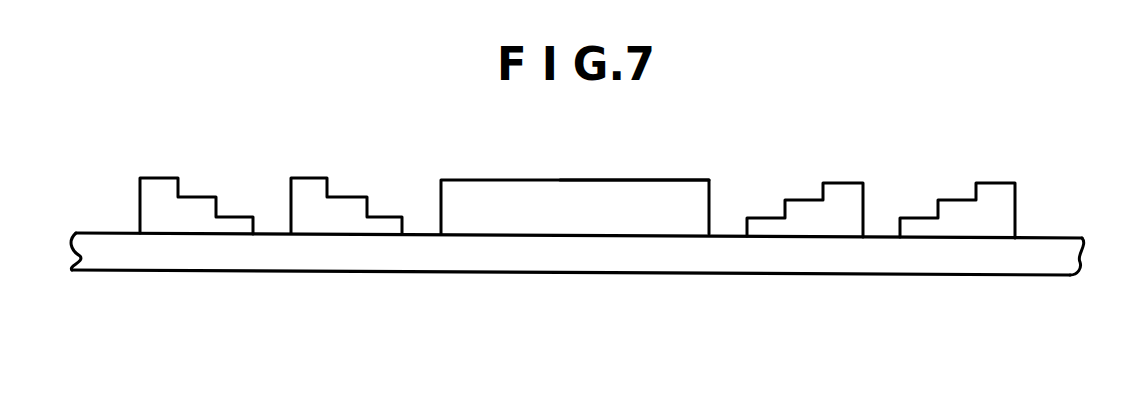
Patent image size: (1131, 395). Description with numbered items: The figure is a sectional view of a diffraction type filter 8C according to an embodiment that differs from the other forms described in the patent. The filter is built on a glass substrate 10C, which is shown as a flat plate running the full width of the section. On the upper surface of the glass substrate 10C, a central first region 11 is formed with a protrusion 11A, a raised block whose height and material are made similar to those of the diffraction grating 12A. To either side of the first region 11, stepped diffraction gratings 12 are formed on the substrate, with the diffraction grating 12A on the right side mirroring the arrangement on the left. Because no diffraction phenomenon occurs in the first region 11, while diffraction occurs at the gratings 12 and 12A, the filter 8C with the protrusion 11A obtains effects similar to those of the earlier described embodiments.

The diffraction type filter 8C is at (919, 292).
The glass substrate 10C is at (1053, 260).
The first region 11 is at (589, 153).
The protrusion 11A is at (683, 180).
The diffraction grating 12 is at (397, 154).
The diffraction grating 12A is at (845, 181).